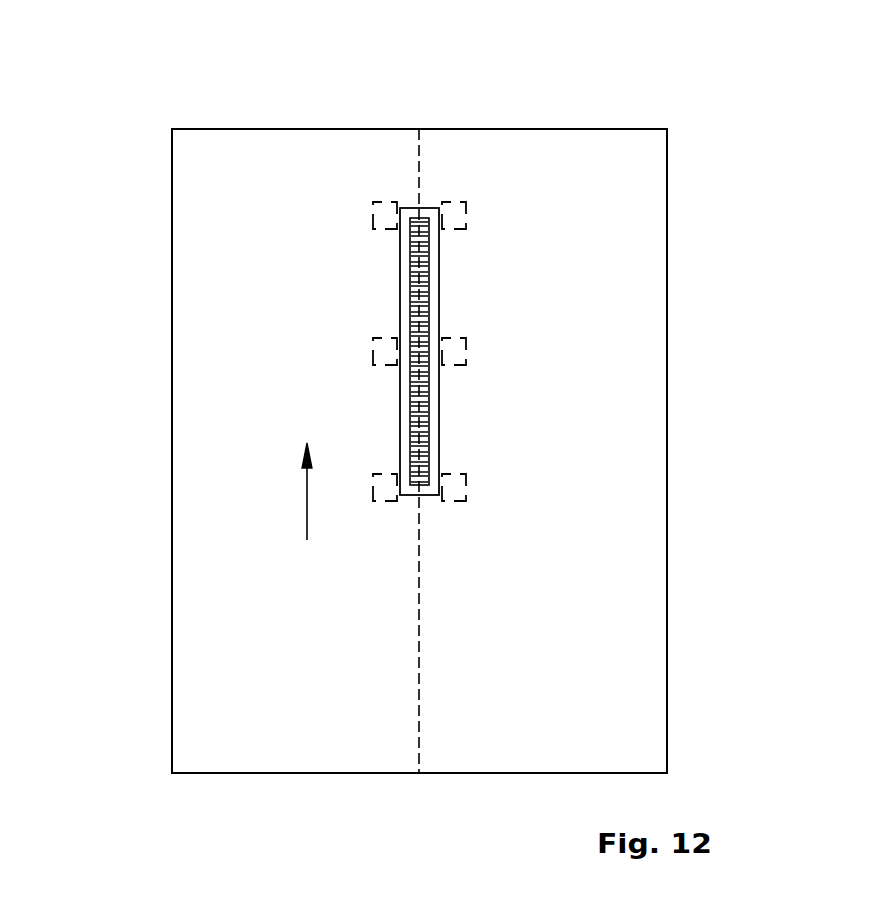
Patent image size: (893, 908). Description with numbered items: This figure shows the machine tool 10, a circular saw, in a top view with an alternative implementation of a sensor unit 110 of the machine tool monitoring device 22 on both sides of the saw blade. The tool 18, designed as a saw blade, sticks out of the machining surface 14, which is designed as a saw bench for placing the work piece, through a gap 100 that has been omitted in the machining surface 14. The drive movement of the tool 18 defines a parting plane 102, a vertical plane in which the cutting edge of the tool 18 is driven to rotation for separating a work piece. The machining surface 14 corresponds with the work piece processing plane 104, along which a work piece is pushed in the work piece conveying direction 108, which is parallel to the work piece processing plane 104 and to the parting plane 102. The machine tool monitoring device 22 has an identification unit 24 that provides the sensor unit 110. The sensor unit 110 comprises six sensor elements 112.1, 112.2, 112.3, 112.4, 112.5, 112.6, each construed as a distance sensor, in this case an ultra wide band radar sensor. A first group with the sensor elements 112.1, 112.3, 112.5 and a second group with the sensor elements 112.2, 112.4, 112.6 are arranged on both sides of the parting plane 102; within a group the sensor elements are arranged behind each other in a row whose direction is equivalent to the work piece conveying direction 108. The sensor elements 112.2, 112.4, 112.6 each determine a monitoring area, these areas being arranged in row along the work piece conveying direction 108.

The machine tool 10 is at (672, 86).
The machining surface 14 is at (590, 162).
The tool 18 is at (419, 288).
The machine tool monitoring device 22 is at (464, 187).
The identification unit 24 is at (364, 188).
The gap 100 is at (439, 414).
The parting plane 102 is at (419, 722).
The work piece processing plane 104 is at (612, 729).
The work piece conveying direction 108 is at (306, 492).
The sensor unit 110 is at (488, 497).
The sensor element 112.1 is at (380, 498).
The sensor element 112.2 is at (466, 481).
The sensor element 112.3 is at (373, 351).
The sensor element 112.4 is at (466, 351).
The sensor element 112.5 is at (373, 214).
The sensor element 112.6 is at (466, 212).